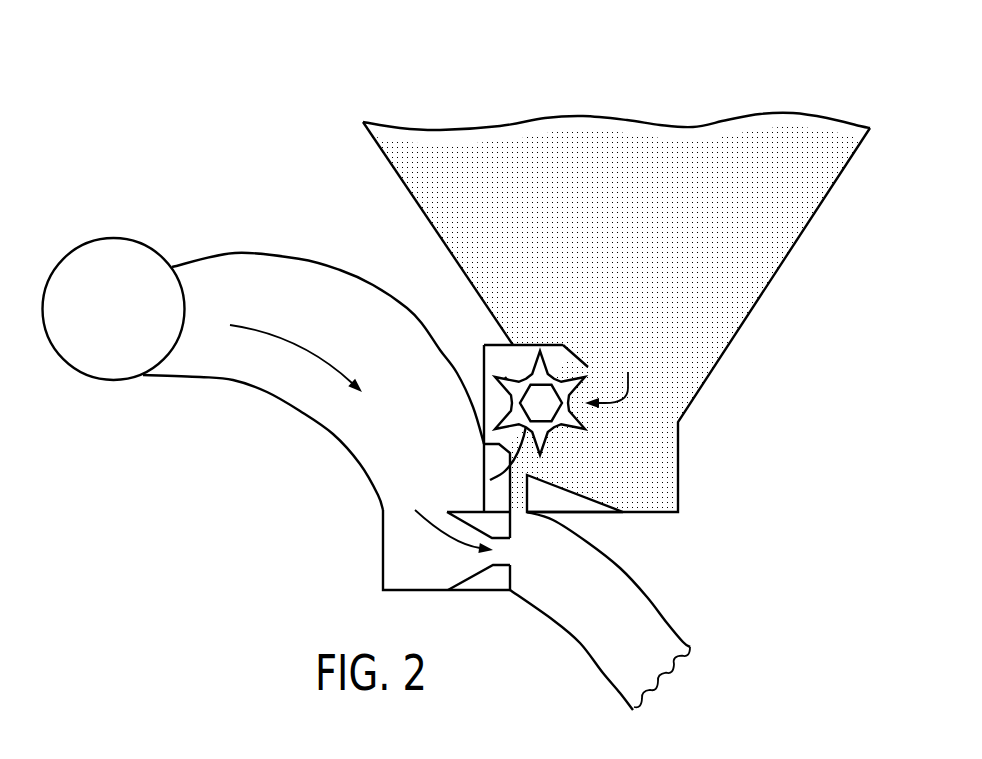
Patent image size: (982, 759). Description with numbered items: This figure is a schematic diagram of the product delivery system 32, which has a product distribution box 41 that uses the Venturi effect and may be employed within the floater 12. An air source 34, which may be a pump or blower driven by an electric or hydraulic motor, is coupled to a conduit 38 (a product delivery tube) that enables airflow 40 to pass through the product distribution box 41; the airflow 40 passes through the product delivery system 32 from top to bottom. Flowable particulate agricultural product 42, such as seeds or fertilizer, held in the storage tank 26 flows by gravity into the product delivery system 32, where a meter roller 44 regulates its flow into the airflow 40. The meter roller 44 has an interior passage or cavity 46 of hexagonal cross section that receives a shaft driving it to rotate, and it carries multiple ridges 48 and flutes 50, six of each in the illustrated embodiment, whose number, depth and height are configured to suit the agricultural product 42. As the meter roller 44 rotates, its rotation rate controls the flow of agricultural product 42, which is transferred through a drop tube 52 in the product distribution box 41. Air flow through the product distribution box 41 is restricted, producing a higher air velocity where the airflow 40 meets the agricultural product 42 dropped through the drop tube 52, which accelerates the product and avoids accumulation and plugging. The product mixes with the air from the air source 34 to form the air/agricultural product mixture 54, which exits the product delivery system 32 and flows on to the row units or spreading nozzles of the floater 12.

The floater 12 is at (198, 100).
The storage tank 26 is at (390, 160).
The product delivery system 32 is at (460, 336).
The air source 34 is at (112, 238).
The conduit 38 is at (345, 456).
The airflow 40 is at (297, 344).
The product distribution box 41 is at (383, 550).
The flowable particulate agricultural product 42 is at (793, 230).
The meter roller 44 is at (614, 375).
The interior passage/cavity 46 is at (490, 479).
The ridges 48 is at (506, 378).
The flutes 50 is at (553, 376).
The drop tube 52 is at (520, 492).
The air/agricultural product mixture 54 is at (583, 617).